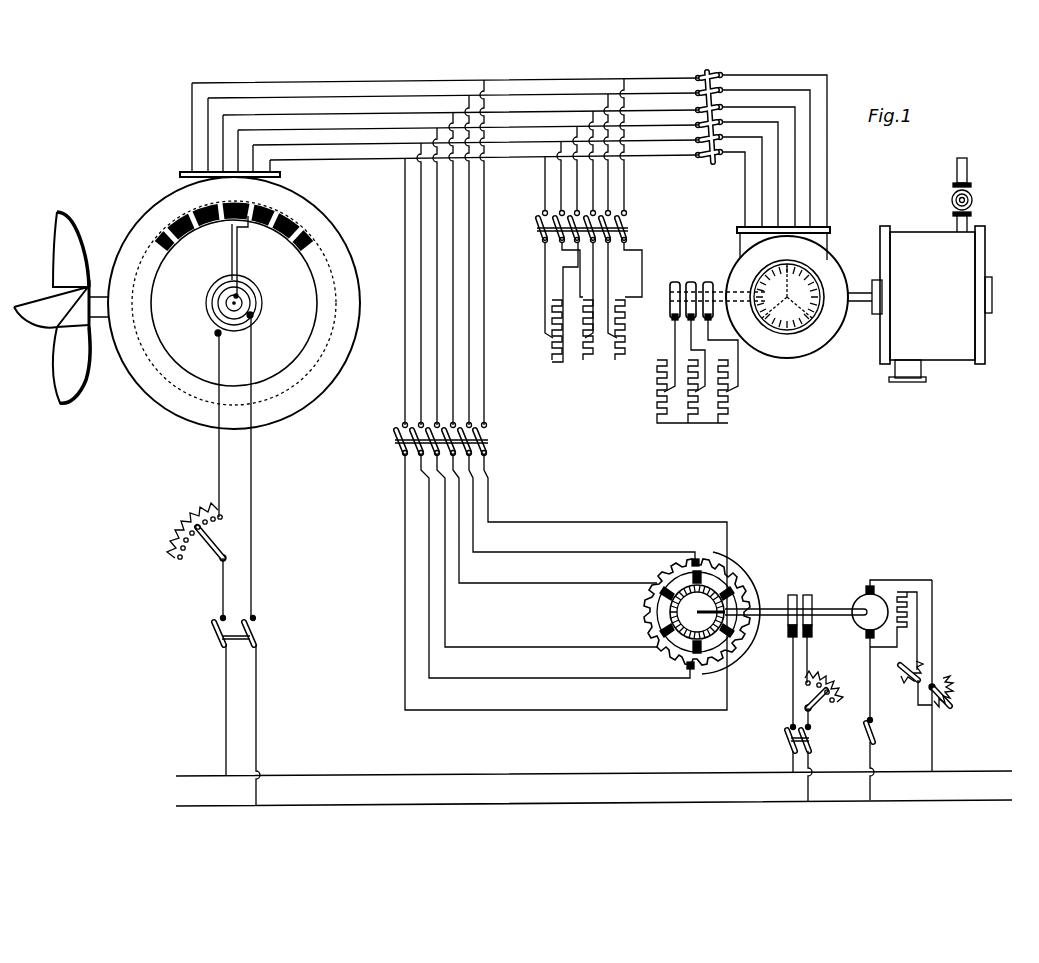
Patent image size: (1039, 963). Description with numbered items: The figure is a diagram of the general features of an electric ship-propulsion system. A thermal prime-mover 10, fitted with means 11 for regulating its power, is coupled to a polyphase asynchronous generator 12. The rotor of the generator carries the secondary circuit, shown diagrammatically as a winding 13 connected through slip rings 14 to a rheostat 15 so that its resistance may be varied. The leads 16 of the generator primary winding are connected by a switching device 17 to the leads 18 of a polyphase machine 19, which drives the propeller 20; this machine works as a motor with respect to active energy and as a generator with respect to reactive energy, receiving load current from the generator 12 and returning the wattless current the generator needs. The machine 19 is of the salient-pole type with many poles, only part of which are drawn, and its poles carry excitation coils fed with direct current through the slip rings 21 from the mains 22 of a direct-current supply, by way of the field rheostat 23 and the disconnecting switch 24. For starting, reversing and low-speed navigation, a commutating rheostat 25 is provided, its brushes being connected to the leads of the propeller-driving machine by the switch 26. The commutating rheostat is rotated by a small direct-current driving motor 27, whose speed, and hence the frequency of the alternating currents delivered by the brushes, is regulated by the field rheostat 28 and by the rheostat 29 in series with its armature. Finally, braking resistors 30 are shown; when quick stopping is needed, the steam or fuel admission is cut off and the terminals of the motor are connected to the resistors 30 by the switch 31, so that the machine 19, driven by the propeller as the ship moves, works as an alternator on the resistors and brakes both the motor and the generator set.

The thermal prime-mover 10 is at (920, 304).
The power regulating means 11 is at (949, 195).
The polyphase asynchronous generator 12 is at (787, 300).
The winding 13 is at (806, 285).
The slip rings 14 is at (718, 289).
The rheostat 15 is at (697, 383).
The leads of the primary winding 16 is at (523, 151).
The switching device 17 is at (710, 103).
The leads of the polyphase machine 18 is at (218, 130).
The polyphase machine 19 is at (149, 212).
The propeller 20 is at (61, 307).
The slip rings 21 is at (248, 305).
The mains 22 is at (586, 774).
The field rheostat 23 is at (196, 475).
The disconnecting switch 24 is at (219, 560).
The commutating rheostat 25 is at (740, 592).
The switch 26 is at (561, 395).
The small driving motor 27 is at (859, 689).
The field rheostat 28 is at (901, 650).
The rheostat 29 is at (956, 675).
The resistors 30 is at (593, 316).
The switch 31 is at (598, 161).